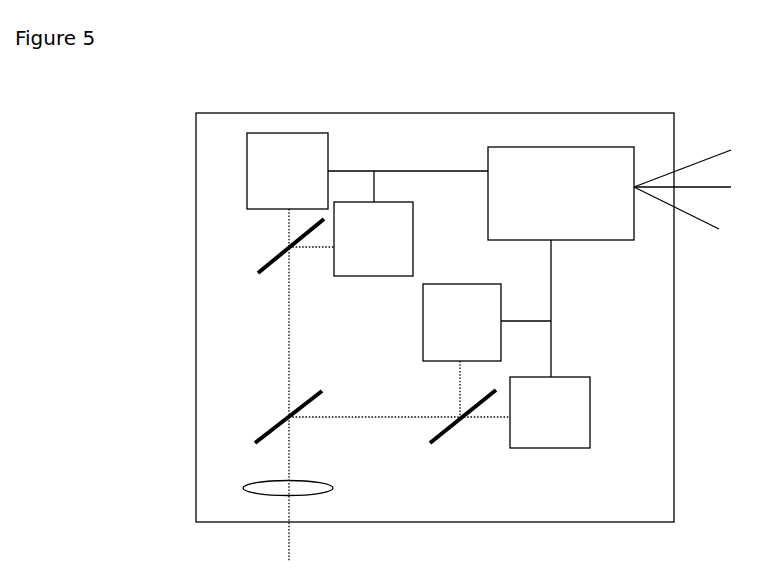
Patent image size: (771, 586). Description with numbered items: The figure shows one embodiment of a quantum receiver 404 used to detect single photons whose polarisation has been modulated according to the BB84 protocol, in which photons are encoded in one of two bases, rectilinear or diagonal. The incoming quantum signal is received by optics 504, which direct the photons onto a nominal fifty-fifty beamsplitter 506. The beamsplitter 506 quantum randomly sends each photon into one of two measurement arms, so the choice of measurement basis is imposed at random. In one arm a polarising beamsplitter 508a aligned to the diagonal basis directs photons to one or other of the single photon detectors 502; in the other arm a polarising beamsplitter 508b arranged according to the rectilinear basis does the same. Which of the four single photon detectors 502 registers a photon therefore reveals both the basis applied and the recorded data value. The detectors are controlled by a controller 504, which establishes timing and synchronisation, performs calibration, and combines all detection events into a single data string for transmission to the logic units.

The quantum receiver 404 is at (684, 301).
The single photon detectors 502 is at (418, 290).
The optics / controller 504 is at (318, 490).
The 50:50 beamsplitter 506 is at (266, 431).
The polarising beamsplitter 508a is at (260, 265).
The polarising beamsplitter 508b is at (449, 432).